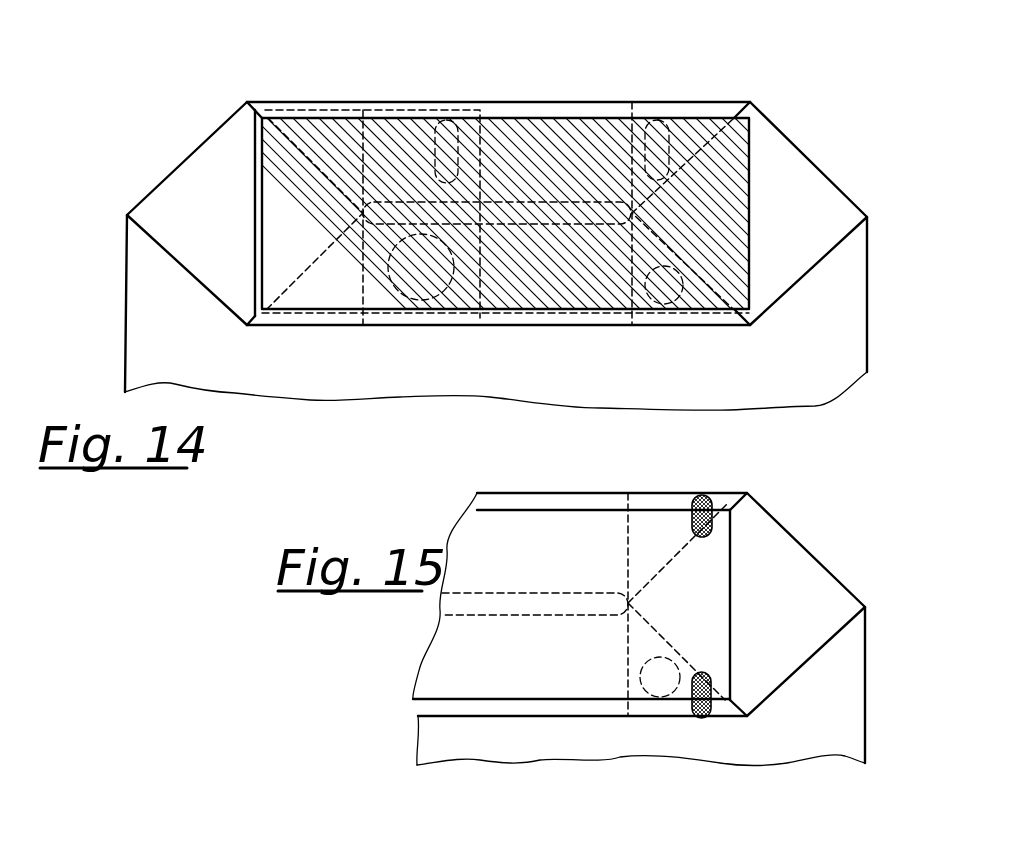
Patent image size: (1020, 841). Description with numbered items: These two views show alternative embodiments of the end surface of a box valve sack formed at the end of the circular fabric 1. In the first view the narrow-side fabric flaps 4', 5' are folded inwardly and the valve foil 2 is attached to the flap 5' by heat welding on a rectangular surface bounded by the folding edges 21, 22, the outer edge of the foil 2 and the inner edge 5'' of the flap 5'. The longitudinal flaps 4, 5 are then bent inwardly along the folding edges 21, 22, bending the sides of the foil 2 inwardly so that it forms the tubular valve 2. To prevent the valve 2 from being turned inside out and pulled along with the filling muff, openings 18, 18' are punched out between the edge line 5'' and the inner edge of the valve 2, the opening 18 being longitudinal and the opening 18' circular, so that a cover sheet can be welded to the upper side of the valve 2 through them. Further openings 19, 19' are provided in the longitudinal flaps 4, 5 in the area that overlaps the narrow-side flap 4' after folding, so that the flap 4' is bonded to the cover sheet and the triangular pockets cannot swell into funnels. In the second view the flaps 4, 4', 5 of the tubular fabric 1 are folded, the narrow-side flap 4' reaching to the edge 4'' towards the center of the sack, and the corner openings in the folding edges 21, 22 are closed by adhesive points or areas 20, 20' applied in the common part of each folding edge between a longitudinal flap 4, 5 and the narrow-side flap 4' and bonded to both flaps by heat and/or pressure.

In FIG. 14, the circular fabric 1 is at (157, 298).
In FIG. 15, the circular fabric 1 is at (843, 678).
In FIG. 14, the valve foil 2 is at (260, 172).
In FIG. 14, the longitudinal flap 4 is at (498, 78).
In FIG. 15, the longitudinal flap 4 is at (612, 476).
In FIG. 15, the narrow-side fabric flap 4' is at (777, 583).
In FIG. 15, the edge of narrow-side flap 4'' is at (585, 578).
In FIG. 14, the longitudinal flap 5 is at (498, 351).
In FIG. 15, the longitudinal flap 5 is at (565, 730).
In FIG. 14, the narrow-side fabric flap 5' is at (215, 231).
In FIG. 14, the inner edge of flap 5' 5'' is at (499, 186).
In FIG. 14, the opening 18 is at (454, 104).
In FIG. 14, the opening 18' is at (418, 303).
In FIG. 14, the opening 19 is at (674, 103).
In FIG. 14, the opening 19' is at (682, 320).
In FIG. 15, the adhesive area 20 is at (723, 494).
In FIG. 15, the adhesive area 20' is at (740, 717).
In FIG. 14, the folding edge 21 is at (515, 101).
In FIG. 15, the folding edge 21 is at (563, 492).
In FIG. 14, the folding edge 22 is at (497, 327).
In FIG. 15, the folding edge 22 is at (565, 717).